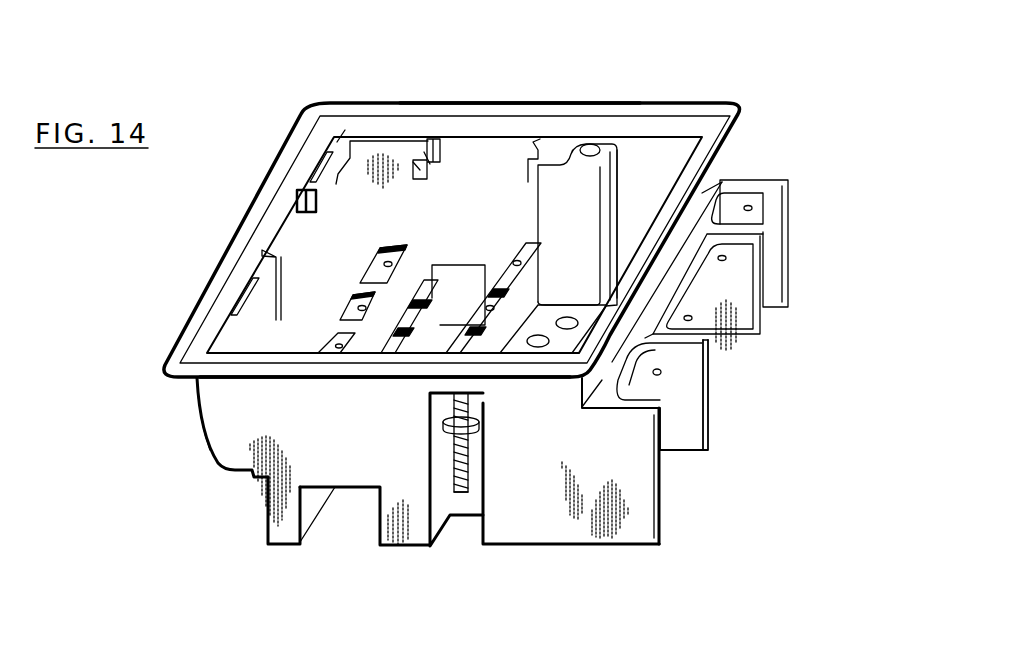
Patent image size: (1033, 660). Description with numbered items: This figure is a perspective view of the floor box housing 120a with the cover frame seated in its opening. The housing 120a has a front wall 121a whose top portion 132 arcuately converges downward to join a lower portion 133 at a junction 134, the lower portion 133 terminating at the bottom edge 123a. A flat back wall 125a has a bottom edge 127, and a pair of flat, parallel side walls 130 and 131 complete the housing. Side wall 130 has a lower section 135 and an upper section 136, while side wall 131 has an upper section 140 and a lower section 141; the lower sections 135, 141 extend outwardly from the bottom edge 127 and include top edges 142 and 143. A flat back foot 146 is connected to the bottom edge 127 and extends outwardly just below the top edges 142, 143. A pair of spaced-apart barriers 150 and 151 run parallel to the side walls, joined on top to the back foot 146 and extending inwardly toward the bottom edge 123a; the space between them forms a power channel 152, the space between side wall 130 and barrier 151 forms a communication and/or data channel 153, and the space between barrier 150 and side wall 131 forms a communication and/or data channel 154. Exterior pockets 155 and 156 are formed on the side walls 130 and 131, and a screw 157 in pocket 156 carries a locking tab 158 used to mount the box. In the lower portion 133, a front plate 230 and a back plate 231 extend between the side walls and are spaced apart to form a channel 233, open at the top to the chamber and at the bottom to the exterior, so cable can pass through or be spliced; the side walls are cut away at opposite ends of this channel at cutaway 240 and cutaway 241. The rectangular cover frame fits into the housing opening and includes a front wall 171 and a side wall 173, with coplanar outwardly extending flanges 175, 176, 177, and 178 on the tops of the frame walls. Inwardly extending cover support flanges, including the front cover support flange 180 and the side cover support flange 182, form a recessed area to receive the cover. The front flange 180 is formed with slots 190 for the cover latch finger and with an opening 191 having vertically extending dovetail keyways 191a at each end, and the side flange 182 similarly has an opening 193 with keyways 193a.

The housing 120a is at (628, 90).
The flange 175 is at (247, 232).
The front wall 171 is at (277, 208).
The flange 178 is at (510, 110).
The side wall 173 is at (556, 130).
The flange 177 is at (302, 374).
The slots 190 is at (317, 170).
The front cover support flange 180 is at (337, 144).
The cover support flange 182 is at (390, 140).
The opening 193 is at (530, 150).
The dovetail keyway 193a is at (425, 152).
The exterior pocket 155 is at (594, 247).
The upper section 136 is at (671, 179).
The lower section 135 is at (648, 244).
The side wall 130 is at (481, 225).
The back plate 231 is at (493, 298).
The front plate 230 is at (396, 316).
The cutaway 240 is at (458, 295).
The opening 191 is at (290, 222).
The dovetail keyway 191a is at (299, 213).
The front wall 121a is at (197, 404).
The top portion 132 is at (202, 430).
The junction 134 is at (220, 468).
The lower portion 133 is at (268, 490).
The channel 233 is at (352, 513).
The cutaway 241 is at (377, 532).
The side wall 131 is at (341, 452).
The bottom edge 123a is at (470, 520).
The lower section 141 is at (563, 502).
The upper section 140 is at (548, 425).
The flange 176 is at (583, 392).
The screw 157 is at (455, 460).
The locking tab 158 is at (443, 421).
The exterior pocket 156 is at (470, 495).
The top edge 143 is at (650, 403).
The barrier 150 is at (678, 432).
The power channel 152 is at (720, 392).
The communication and/or data channel 154 is at (668, 495).
The back wall 125a is at (730, 160).
The bottom edge 127 is at (722, 177).
The top edge 142 is at (792, 178).
The communication and/or data channel 153 is at (770, 248).
The barrier 151 is at (740, 310).
The back foot 146 is at (700, 378).